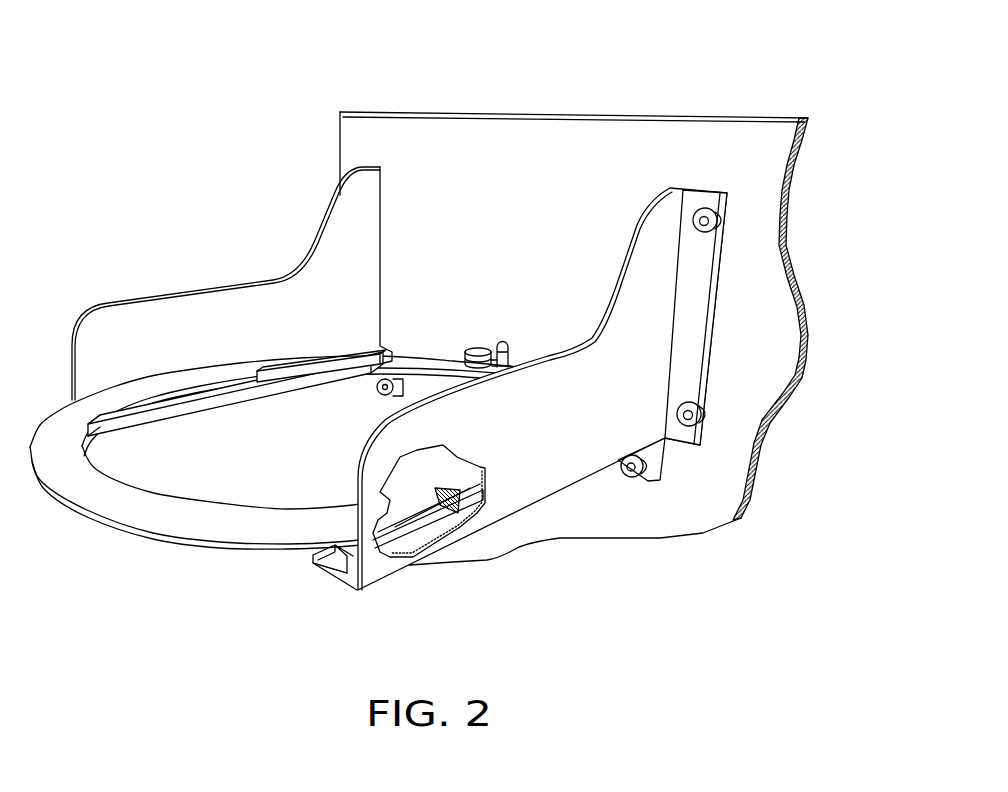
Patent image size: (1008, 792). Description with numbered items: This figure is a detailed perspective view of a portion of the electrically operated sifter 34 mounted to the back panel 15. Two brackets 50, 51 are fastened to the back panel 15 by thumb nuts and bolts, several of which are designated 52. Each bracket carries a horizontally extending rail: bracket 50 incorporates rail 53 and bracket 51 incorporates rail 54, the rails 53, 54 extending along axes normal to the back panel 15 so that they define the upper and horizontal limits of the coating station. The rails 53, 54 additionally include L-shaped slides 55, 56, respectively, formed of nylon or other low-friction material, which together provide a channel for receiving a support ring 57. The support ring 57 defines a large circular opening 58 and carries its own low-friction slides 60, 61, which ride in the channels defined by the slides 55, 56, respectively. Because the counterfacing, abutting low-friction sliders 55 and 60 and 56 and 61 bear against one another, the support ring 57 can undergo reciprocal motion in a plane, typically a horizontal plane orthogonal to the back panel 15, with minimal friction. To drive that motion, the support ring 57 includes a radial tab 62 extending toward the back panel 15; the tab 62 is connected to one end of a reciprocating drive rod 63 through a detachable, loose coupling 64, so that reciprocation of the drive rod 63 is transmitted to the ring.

The back panel 15 is at (698, 145).
The electrically operated sifter 34 is at (243, 108).
The bracket 50 is at (300, 223).
The bracket 51 is at (647, 325).
The thumb nuts and bolts 52 is at (717, 226).
The rail 53 is at (140, 430).
The rail 54 is at (336, 586).
The L-shaped slide 55 is at (283, 380).
The L-shaped slide 56 is at (310, 558).
The support ring 57 is at (123, 503).
The circular opening 58 is at (266, 488).
The slide 60 is at (163, 397).
The slide 61 is at (440, 513).
The radial tab 62 is at (453, 367).
The reciprocating drive rod 63 is at (493, 362).
The detachable loose coupling 64 is at (477, 347).